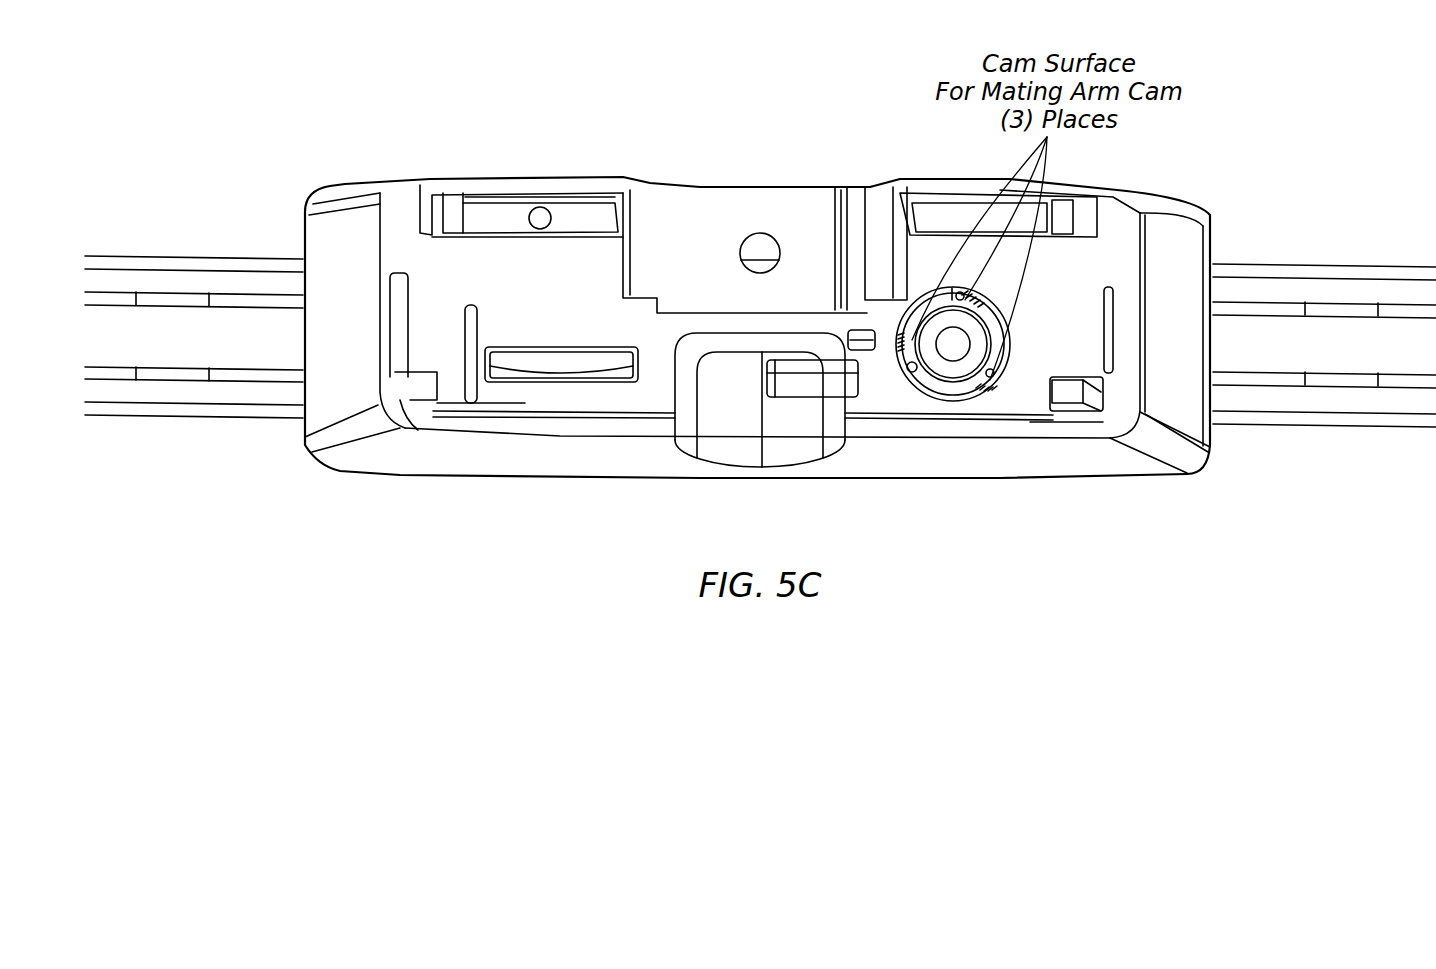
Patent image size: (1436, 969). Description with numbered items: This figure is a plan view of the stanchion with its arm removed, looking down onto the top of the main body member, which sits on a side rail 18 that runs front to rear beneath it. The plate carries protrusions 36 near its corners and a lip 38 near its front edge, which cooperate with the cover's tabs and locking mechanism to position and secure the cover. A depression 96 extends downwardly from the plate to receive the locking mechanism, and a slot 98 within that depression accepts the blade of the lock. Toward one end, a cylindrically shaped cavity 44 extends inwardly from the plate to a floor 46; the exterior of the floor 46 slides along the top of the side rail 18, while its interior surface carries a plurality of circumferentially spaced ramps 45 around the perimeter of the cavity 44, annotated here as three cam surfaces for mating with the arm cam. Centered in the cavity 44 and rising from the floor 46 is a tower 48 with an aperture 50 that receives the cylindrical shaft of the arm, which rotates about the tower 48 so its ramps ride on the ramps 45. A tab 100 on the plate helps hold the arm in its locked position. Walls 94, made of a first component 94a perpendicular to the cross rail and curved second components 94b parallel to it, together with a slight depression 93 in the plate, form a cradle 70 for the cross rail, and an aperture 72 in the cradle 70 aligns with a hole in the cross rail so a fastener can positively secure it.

The side rail 18 is at (1255, 412).
The protrusion 36 is at (410, 432).
The lip 38 is at (537, 430).
The cavity 44 is at (950, 395).
The ramp 45 is at (1077, 390).
The floor 46 is at (968, 372).
The tower 48 is at (928, 310).
The aperture 50 is at (957, 347).
The cradle 70 is at (700, 212).
The aperture 72 is at (760, 233).
The depression 93 is at (787, 213).
The wall 94 is at (508, 196).
The first component 94a is at (542, 188).
The second component 94b is at (892, 200).
The depression 96 is at (727, 445).
The slot 98 is at (793, 377).
The tab 100 is at (862, 330).